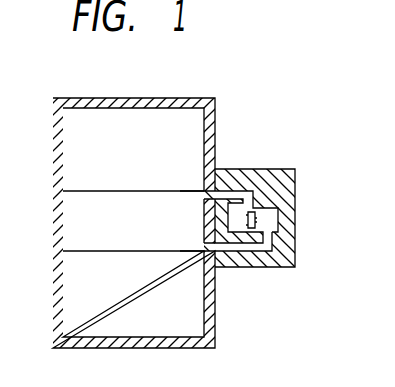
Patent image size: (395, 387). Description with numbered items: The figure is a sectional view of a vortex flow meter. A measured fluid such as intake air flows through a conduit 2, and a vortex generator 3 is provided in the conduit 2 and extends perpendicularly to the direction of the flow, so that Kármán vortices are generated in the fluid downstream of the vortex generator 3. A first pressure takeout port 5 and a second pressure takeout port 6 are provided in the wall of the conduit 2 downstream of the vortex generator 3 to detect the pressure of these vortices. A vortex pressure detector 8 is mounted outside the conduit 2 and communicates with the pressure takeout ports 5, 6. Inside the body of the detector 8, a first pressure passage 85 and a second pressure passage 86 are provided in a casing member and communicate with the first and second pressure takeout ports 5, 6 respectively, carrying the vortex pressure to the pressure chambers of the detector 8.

The conduit 2 is at (142, 100).
The vortex generator 3 is at (72, 218).
The first pressure takeout port 5 is at (202, 192).
The second pressure takeout port 6 is at (202, 252).
The vortex pressure detector 8 is at (297, 213).
The first pressure passage 85 is at (242, 172).
The second pressure passage 86 is at (262, 250).